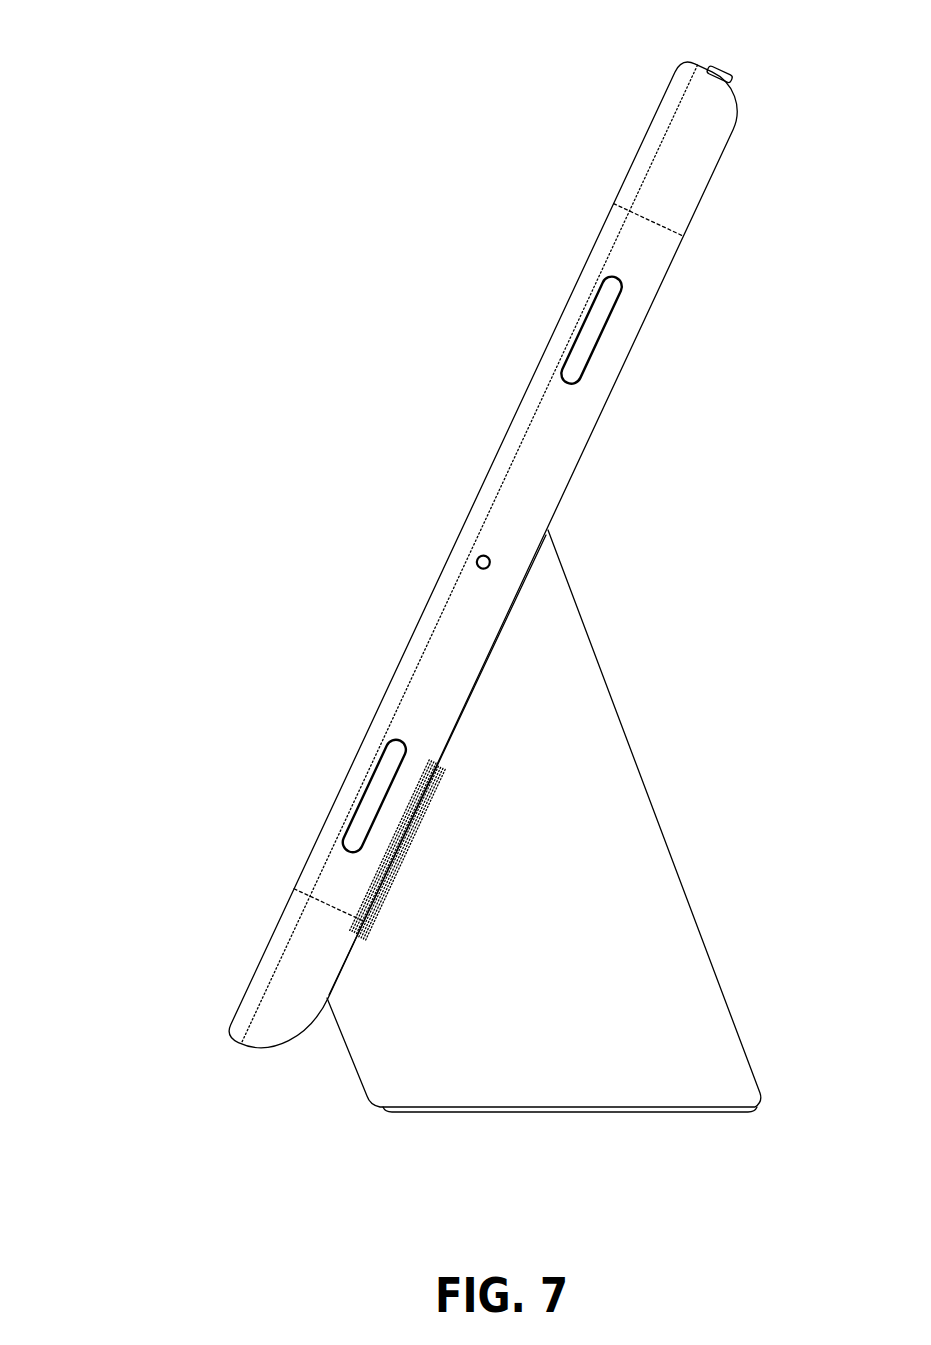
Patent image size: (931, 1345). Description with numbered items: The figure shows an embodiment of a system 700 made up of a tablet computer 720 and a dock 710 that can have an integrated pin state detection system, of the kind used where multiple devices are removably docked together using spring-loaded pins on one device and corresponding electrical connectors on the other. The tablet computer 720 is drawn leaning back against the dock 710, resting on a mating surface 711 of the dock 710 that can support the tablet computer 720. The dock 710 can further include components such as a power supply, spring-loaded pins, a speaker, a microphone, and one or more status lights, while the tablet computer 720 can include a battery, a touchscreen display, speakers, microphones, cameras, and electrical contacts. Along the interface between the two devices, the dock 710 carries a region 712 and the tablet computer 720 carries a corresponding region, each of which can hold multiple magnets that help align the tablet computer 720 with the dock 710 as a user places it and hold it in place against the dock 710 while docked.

The system 700 is at (136, 100).
The tablet computer 720 is at (573, 156).
The dock 710 is at (329, 1104).
The mating surface 711 is at (484, 718).
The region 712 is at (417, 827).